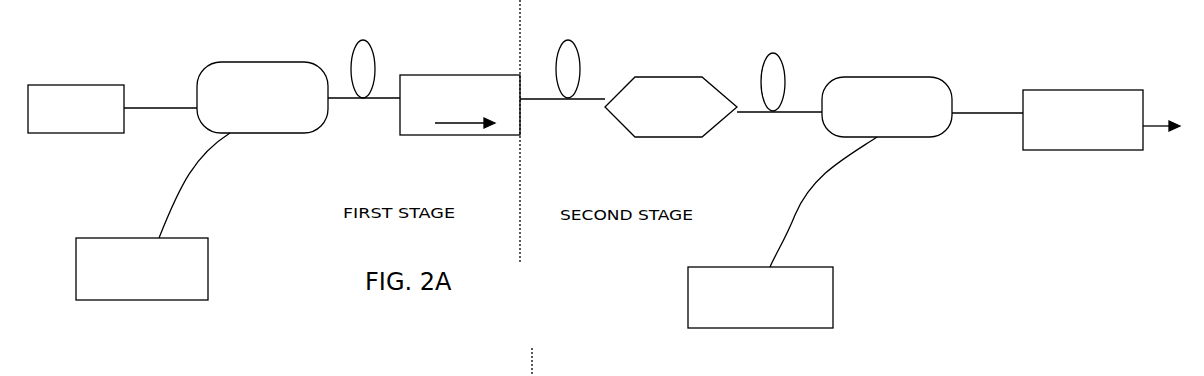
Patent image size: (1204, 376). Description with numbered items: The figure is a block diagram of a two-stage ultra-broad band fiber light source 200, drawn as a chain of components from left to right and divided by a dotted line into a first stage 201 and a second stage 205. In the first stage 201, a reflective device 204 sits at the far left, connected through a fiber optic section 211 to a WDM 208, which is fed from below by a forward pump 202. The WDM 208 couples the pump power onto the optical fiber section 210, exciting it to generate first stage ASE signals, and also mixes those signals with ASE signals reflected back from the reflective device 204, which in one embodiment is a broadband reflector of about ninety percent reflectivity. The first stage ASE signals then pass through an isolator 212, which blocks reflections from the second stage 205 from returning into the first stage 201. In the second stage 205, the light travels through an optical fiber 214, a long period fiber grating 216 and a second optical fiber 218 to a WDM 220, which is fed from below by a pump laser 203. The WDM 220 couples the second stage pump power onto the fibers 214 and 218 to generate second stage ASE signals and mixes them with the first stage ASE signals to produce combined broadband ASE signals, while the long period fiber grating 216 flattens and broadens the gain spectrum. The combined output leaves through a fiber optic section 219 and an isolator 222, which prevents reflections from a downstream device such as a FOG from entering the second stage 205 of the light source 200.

The two-stage ultra-broad band fiber light source 200 is at (934, 202).
The first stage 201 is at (407, 163).
The forward pump 202 is at (153, 216).
The pump laser 203 is at (782, 232).
The reflective device 204 is at (76, 109).
The second stage 205 is at (600, 163).
The WDM 208 is at (262, 97).
The optical fiber section 210 is at (375, 52).
The fiber optic section 211 is at (147, 108).
The isolator 212 is at (460, 105).
The optical fiber 214 is at (580, 52).
The long period fiber grating 216 is at (671, 107).
The optical fiber 218 is at (782, 67).
The fiber optic section 219 is at (977, 112).
The WDM 220 is at (887, 107).
The isolator 222 is at (1101, 120).